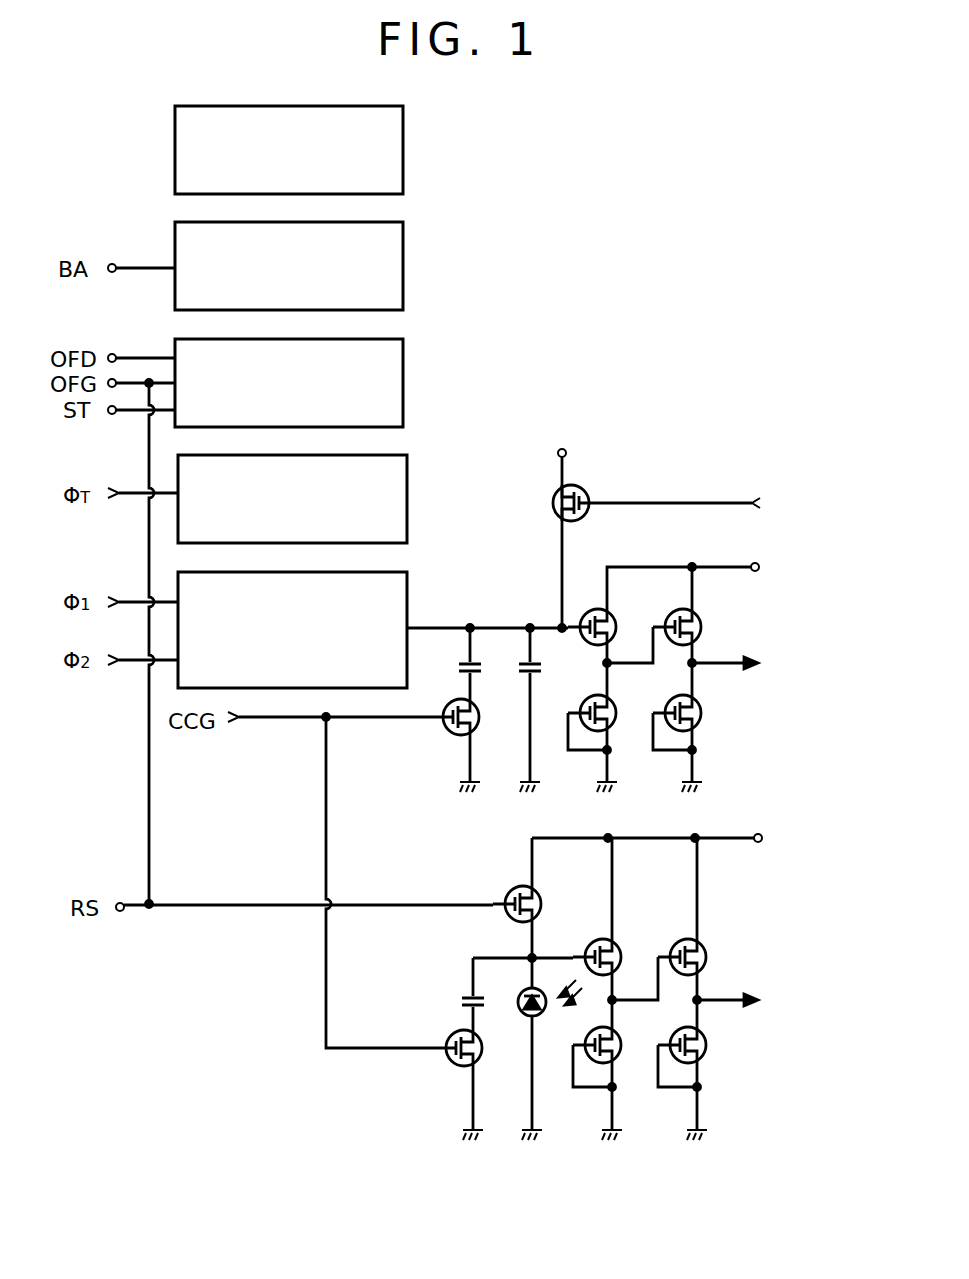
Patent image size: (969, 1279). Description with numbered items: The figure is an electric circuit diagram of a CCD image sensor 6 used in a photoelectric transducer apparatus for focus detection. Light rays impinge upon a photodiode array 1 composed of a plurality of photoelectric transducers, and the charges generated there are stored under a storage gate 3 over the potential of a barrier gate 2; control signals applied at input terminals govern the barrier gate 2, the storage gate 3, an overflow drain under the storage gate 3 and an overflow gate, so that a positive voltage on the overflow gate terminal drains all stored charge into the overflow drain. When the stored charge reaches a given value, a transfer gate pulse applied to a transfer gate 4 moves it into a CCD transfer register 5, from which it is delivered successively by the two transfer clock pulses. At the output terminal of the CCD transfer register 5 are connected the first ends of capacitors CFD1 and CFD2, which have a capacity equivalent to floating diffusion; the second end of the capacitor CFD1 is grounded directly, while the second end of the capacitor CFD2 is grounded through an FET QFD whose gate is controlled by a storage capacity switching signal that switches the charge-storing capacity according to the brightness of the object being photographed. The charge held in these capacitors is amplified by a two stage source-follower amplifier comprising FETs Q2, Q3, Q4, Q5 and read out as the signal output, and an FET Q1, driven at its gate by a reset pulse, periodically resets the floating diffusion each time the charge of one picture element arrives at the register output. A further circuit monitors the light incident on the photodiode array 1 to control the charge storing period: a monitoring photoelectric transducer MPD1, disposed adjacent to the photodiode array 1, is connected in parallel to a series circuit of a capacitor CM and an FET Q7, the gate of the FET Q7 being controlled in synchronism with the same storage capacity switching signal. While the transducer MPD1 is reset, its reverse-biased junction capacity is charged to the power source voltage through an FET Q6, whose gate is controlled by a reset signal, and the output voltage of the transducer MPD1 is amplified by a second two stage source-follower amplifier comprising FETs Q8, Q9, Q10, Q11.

The photodiode array 1 is at (400, 143).
The barrier gate 2 is at (400, 258).
The storage gate 3 is at (400, 370).
The transfer gate 4 is at (405, 481).
The CCD transfer register 5 is at (405, 585).
The CCD image sensor 6 is at (663, 345).
The FET Q1 is at (556, 500).
The FET Q2 is at (612, 616).
The FET Q3 is at (611, 706).
The FET Q4 is at (697, 616).
The FET Q5 is at (696, 706).
The FET Q6 is at (538, 891).
The FET Q7 is at (448, 1051).
The FET Q8 is at (614, 946).
The FET Q9 is at (613, 1038).
The FET Q10 is at (699, 946).
The FET Q11 is at (702, 1038).
The FET QFD is at (478, 729).
The capacitor CFD1 is at (541, 667).
The capacitor CFD2 is at (460, 670).
The capacitor CM is at (466, 997).
The photoelectric transducer for monitoring MPD1 is at (530, 1018).